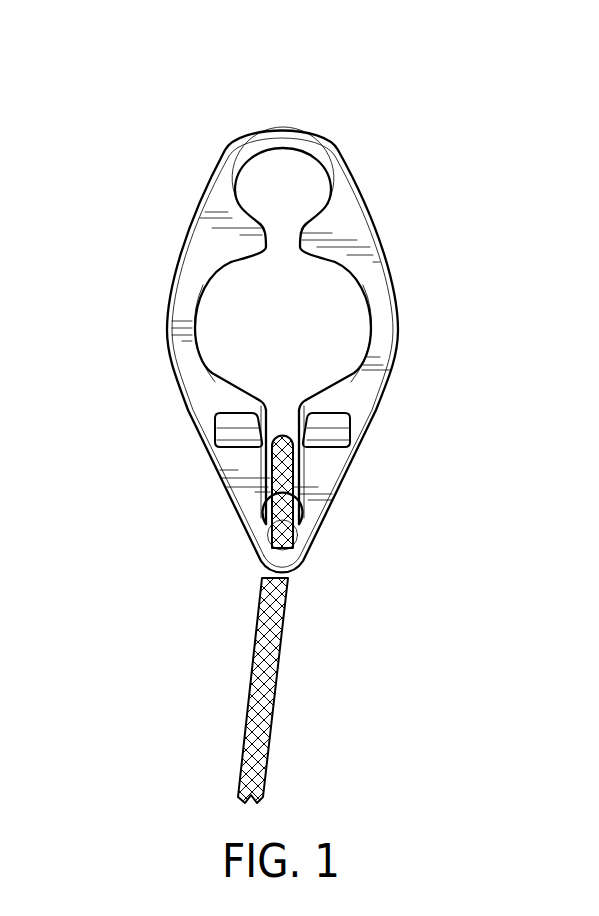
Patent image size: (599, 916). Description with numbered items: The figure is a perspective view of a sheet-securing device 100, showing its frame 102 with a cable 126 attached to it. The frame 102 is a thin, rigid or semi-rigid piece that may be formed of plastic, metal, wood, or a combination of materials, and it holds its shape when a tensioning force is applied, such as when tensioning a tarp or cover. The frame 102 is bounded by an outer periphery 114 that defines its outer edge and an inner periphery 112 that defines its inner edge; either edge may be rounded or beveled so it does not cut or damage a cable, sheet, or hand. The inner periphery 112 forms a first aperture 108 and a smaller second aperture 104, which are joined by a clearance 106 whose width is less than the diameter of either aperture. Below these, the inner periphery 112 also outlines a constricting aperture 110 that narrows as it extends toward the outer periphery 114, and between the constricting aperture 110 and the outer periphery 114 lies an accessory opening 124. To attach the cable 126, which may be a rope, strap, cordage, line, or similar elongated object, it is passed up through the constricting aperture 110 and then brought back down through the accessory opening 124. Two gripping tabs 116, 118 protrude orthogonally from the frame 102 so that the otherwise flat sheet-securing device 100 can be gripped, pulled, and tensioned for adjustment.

The sheet-securing device 100 is at (318, 116).
The frame 102 is at (210, 246).
The second aperture 104 is at (260, 182).
The clearance 106 is at (283, 237).
The first aperture 108 is at (285, 313).
The constricting aperture 110 is at (285, 412).
The inner periphery 112 is at (197, 337).
The outer periphery 114 is at (167, 290).
The gripping tab 116 is at (337, 433).
The gripping tab 118 is at (237, 435).
The accessory opening 124 is at (268, 529).
The cable 126 is at (244, 687).